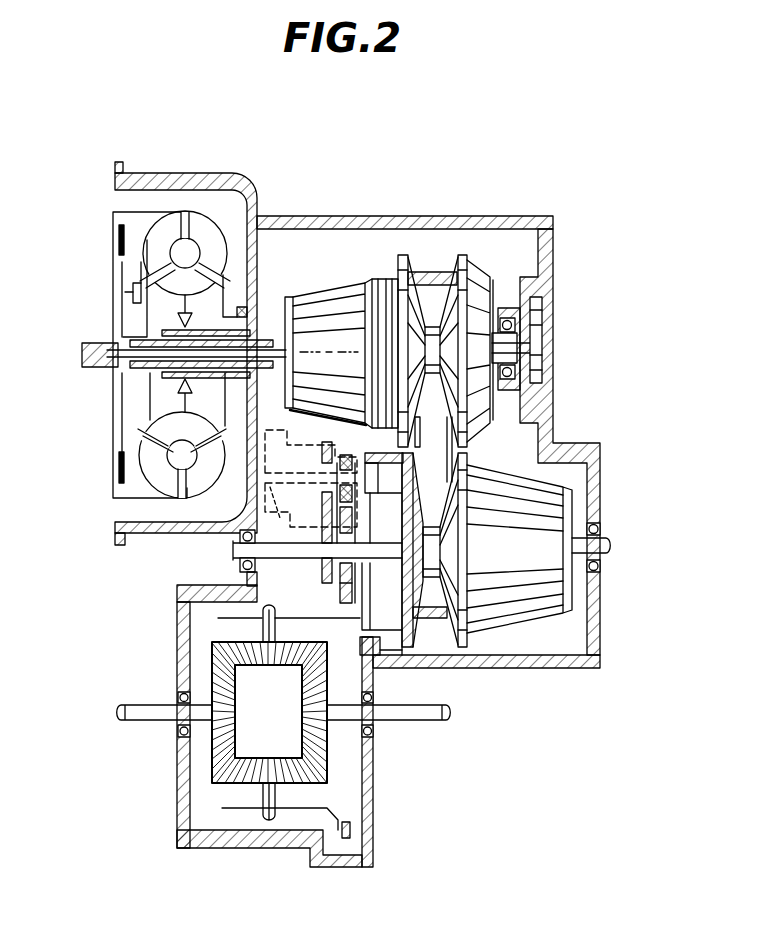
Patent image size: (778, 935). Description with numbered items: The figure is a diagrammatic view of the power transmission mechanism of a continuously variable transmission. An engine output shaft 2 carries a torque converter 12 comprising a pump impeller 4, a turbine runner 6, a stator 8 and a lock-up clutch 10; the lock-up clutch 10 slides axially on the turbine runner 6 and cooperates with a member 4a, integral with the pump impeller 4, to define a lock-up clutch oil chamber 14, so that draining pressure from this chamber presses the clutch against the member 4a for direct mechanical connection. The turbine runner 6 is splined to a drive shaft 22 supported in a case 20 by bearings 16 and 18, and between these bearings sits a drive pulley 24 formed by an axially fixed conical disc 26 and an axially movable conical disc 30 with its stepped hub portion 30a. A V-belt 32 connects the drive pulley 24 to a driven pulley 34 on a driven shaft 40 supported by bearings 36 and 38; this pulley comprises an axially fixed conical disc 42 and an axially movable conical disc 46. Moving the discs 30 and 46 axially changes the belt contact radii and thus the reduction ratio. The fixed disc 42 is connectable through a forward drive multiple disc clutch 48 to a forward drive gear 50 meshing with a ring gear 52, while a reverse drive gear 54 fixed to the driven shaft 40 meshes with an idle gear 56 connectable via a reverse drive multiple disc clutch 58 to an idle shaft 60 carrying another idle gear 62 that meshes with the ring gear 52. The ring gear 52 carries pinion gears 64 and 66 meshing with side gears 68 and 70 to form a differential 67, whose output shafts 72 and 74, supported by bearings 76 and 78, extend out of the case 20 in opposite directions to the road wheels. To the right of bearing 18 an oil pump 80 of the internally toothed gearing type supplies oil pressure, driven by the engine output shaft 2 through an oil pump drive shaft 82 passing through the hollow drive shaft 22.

The engine output shaft 2 is at (104, 346).
The pump impeller 4 is at (216, 225).
The member (converter shell) 4a is at (110, 443).
The turbine runner 6 is at (147, 237).
The stator 8 is at (204, 292).
The lock-up clutch 10 is at (117, 240).
The torque converter 12 is at (104, 488).
The lock-up clutch oil chamber 14 is at (112, 282).
The bearing 16 is at (268, 340).
The bearing 18 is at (506, 308).
The case 20 is at (556, 230).
The drive shaft 22 is at (279, 372).
The drive pulley 24 is at (462, 252).
The axially fixed conical disc 26 is at (482, 270).
The axially movable conical disc 30 is at (403, 252).
The stepped hub portion 30a is at (375, 285).
The V-belt 32 is at (431, 272).
The driven pulley 34 is at (450, 643).
The bearing 36 is at (240, 565).
The bearing 38 is at (601, 527).
The driven shaft 40 is at (369, 543).
The axially fixed conical disc 42 is at (390, 645).
The axially movable conical disc 46 is at (468, 456).
The forward drive multiple disc clutch 48 is at (384, 598).
The forward drive gear 50 is at (338, 580).
The ring gear 52 is at (360, 648).
The reverse drive gear 54 is at (320, 569).
The idle gear 56 is at (320, 454).
The reverse drive multiple disc clutch 58 is at (298, 410).
The idle shaft 60 is at (320, 514).
The idle gear 62 is at (346, 462).
The pinion gear 64 is at (293, 642).
The pinion gear 66 is at (308, 783).
The differential 67 is at (249, 802).
The side gear 68 is at (228, 683).
The side gear 70 is at (310, 718).
The output shaft 72 is at (150, 724).
The output shaft 74 is at (440, 720).
The bearing 76 is at (178, 697).
The bearing 78 is at (376, 731).
The oil pump 80 is at (566, 296).
The oil pump drive shaft 82 is at (120, 362).